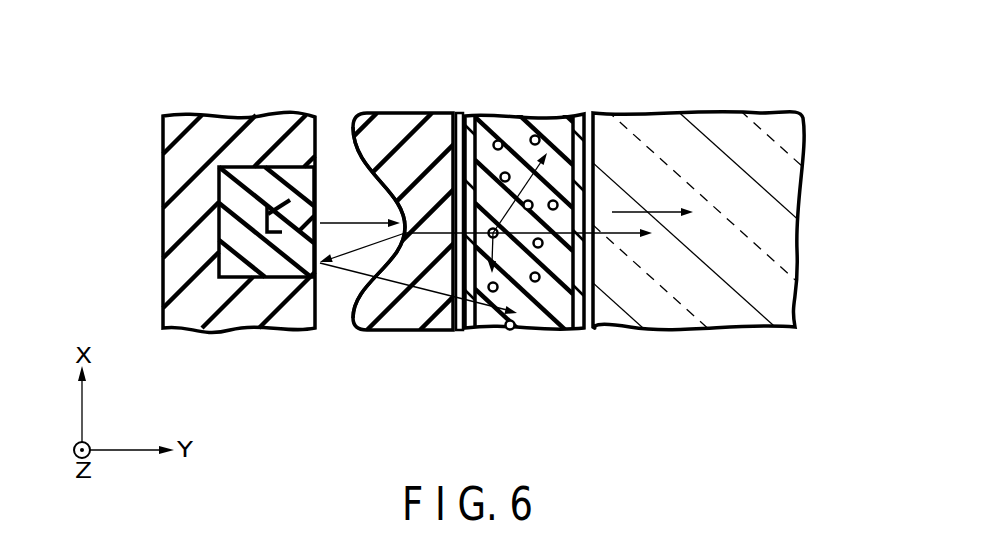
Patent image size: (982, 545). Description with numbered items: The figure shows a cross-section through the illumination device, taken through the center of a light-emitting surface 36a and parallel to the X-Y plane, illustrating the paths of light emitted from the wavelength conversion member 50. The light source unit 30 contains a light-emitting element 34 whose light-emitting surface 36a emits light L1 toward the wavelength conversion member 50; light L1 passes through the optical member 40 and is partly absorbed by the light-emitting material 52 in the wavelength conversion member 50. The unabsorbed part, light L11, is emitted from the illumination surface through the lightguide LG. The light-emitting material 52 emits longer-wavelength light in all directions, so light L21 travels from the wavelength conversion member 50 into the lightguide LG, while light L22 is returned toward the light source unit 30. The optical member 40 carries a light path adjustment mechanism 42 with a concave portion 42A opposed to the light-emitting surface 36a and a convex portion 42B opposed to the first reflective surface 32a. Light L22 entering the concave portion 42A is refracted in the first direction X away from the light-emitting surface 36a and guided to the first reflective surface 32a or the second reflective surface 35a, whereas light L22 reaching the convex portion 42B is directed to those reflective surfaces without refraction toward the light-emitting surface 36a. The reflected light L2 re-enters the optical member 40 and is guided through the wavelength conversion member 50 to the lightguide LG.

The light source unit 30 is at (231, 338).
The first reflective surface 32a is at (318, 140).
The light-emitting element 34 is at (212, 252).
The second reflective surface 35a is at (318, 178).
The light-emitting surface 36a is at (318, 213).
The light path adjustment mechanism 42 is at (362, 340).
The concave portion 42A is at (412, 213).
The convex portion 42B is at (377, 150).
The optical member 40 is at (458, 336).
The wavelength conversion member 50 is at (520, 333).
The light-emitting material 52 is at (493, 228).
The light L1 is at (355, 223).
The light L2 is at (388, 284).
The light L11 is at (628, 210).
The light L21 is at (613, 238).
The light L22 is at (443, 233).
The lightguide LG is at (746, 330).